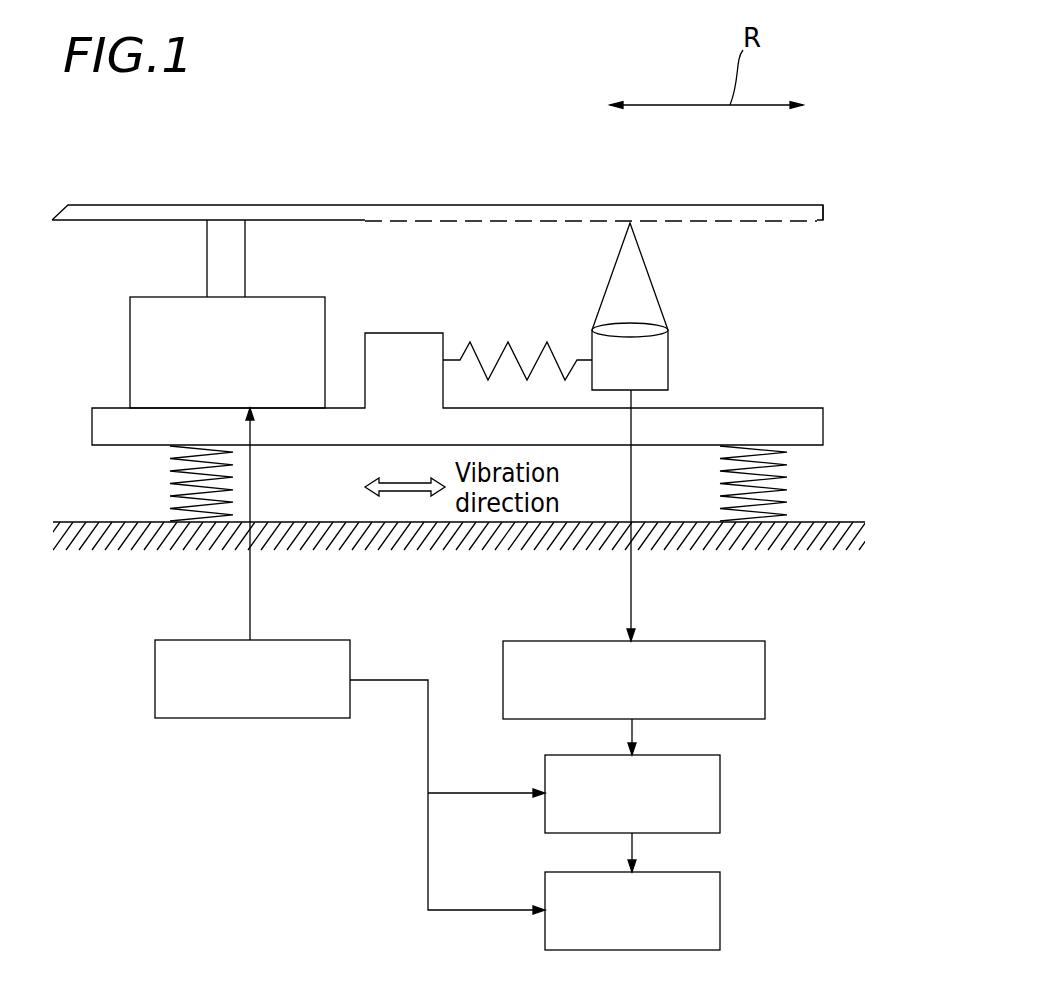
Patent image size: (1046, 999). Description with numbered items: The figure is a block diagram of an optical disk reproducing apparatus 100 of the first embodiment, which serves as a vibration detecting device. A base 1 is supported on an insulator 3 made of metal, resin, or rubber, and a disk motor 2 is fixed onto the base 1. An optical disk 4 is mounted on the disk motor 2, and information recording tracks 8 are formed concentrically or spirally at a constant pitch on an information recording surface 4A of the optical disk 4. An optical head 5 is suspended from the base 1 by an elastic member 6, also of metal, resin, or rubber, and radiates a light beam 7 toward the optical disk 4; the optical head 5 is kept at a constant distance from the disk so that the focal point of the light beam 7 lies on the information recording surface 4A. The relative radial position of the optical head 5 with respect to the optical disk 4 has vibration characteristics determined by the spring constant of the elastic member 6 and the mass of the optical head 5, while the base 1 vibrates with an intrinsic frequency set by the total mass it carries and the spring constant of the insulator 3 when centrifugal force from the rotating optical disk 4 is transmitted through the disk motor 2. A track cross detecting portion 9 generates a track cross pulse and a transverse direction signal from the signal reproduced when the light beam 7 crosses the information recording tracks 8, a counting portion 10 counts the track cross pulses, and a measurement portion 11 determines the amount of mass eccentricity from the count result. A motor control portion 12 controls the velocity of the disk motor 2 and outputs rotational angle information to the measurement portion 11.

The base 1 is at (103, 407).
The disk motor 2 is at (130, 347).
The insulator 3 is at (175, 497).
The optical disk 4 is at (296, 205).
The information recording surface 4A is at (793, 223).
The optical head 5 is at (669, 362).
The elastic member 6 is at (505, 348).
The light beam 7 is at (653, 283).
The information recording tracks 8 is at (435, 222).
The track cross detecting portion 9 is at (765, 690).
The counting portion 10 is at (720, 805).
The measurement portion 11 is at (720, 912).
The motor control portion 12 is at (155, 680).
The optical disk reproducing apparatus 100 is at (218, 880).